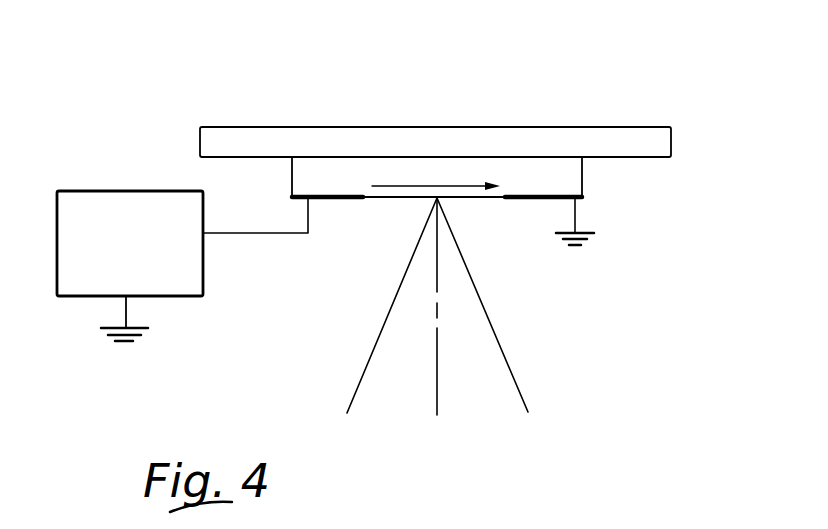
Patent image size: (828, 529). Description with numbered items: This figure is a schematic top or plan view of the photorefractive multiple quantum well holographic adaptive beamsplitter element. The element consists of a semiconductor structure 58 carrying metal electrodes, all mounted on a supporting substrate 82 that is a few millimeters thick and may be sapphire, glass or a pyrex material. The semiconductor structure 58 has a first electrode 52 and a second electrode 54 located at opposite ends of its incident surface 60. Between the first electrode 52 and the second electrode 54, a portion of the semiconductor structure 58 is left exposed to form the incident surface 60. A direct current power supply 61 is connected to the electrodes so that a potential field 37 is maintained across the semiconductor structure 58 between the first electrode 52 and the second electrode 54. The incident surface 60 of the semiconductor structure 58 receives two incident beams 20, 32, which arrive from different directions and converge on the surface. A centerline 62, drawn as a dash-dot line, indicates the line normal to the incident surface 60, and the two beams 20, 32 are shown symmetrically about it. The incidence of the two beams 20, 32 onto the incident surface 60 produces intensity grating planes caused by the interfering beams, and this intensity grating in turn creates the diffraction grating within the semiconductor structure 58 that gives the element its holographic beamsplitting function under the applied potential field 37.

The incident beam 20 is at (513, 370).
The incident beam 32 is at (360, 380).
The potential field 37 is at (408, 187).
The first electrode 52 is at (343, 200).
The second electrode 54 is at (543, 200).
The semiconductor structure 58 is at (565, 182).
The incident surface 60 is at (388, 200).
The direct current power supply 61 is at (133, 191).
The centerline 62 is at (437, 386).
The supporting substrate 82 is at (397, 133).